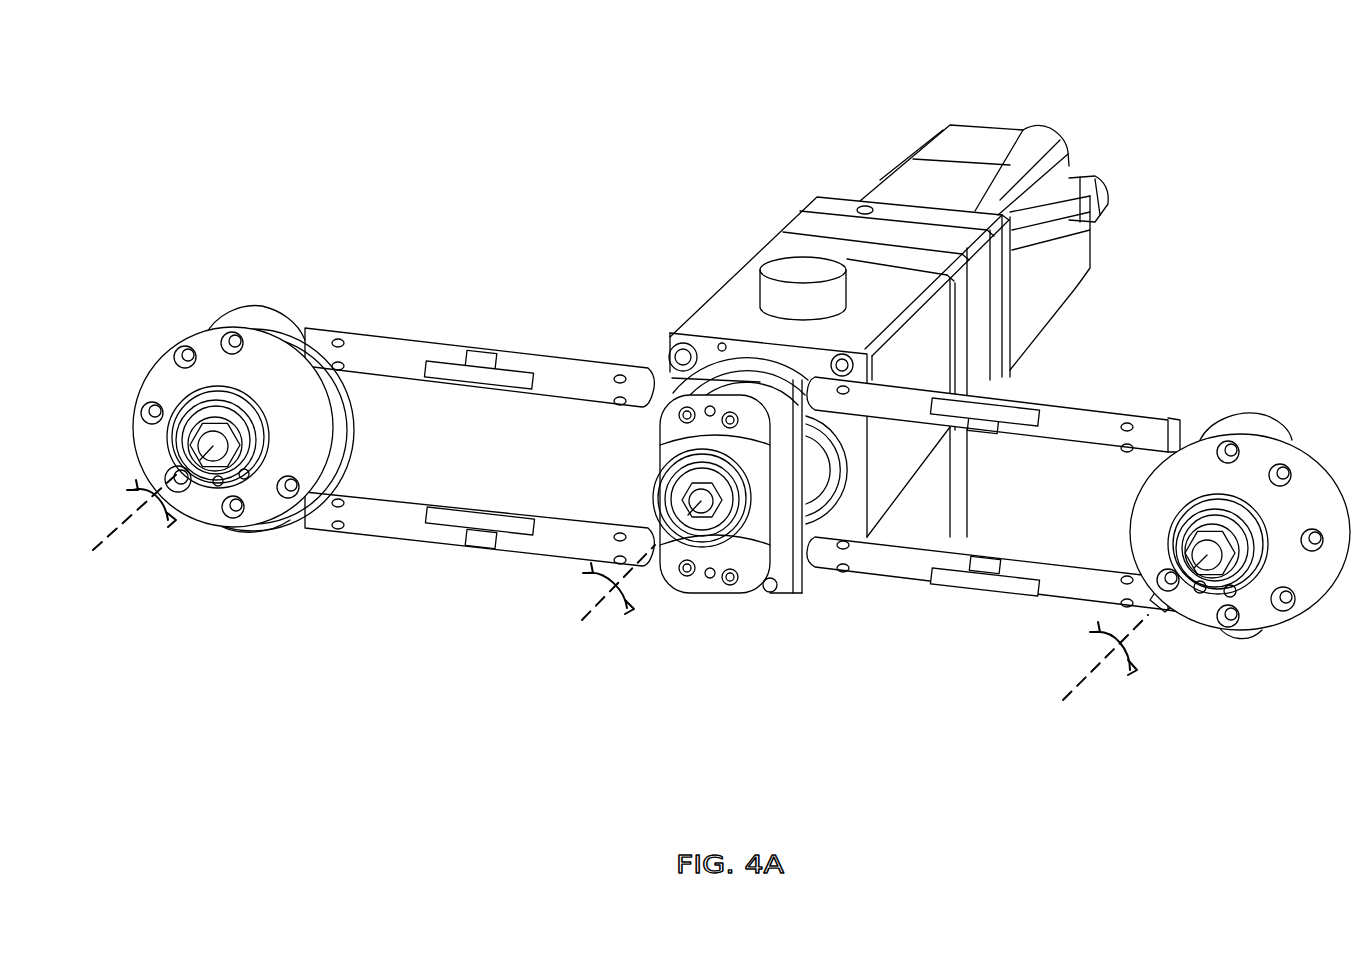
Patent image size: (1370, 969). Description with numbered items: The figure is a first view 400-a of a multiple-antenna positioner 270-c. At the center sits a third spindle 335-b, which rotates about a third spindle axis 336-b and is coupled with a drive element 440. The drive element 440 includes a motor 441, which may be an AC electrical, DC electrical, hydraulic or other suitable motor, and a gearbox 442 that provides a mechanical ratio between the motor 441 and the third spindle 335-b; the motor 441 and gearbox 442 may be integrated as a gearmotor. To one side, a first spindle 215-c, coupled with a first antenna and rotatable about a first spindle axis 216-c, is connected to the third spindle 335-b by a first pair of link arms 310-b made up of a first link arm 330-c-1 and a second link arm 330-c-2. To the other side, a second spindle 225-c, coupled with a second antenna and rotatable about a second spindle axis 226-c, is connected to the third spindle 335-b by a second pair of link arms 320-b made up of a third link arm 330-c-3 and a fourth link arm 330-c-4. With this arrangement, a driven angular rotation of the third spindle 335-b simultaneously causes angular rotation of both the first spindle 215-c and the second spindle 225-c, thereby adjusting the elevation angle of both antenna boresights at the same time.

The first view 400-a is at (1165, 82).
The drive element 440 is at (938, 354).
The motor 441 is at (913, 160).
The gearbox 442 is at (732, 275).
The first spindle 215-c is at (170, 345).
The left flange rotation axis 216-c is at (135, 512).
The second spindle 225-c is at (1203, 625).
The right flange rotation axis 226-c is at (1088, 675).
The first pair of link arms 310-b is at (479, 468).
The second pair of link arms 320-b is at (993, 525).
The first link arm 330-c-1 is at (420, 336).
The second link arm 330-c-2 is at (400, 497).
The third link arm 330-c-3 is at (1063, 402).
The fourth link arm 330-c-4 is at (1077, 528).
The third spindle 335-b is at (713, 598).
The center bracket rotation axis 336-b is at (597, 603).
The multiple-antenna positioner 270-c is at (668, 715).